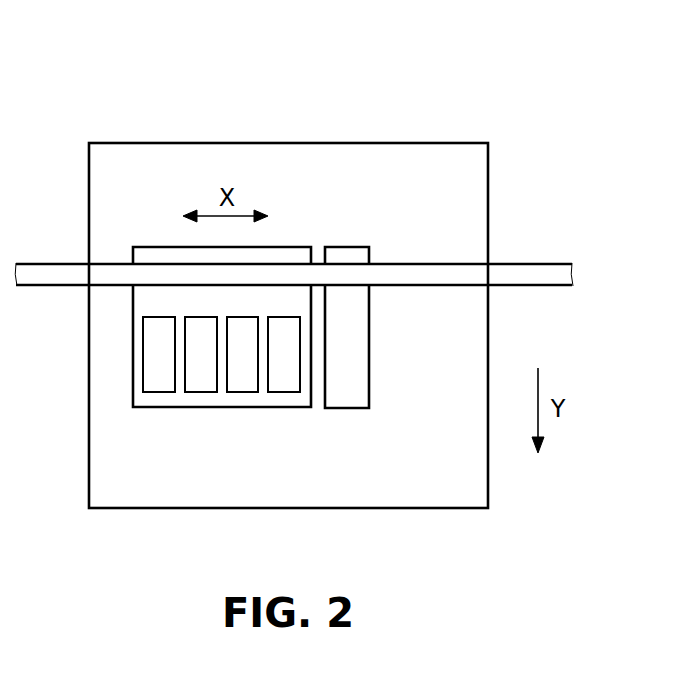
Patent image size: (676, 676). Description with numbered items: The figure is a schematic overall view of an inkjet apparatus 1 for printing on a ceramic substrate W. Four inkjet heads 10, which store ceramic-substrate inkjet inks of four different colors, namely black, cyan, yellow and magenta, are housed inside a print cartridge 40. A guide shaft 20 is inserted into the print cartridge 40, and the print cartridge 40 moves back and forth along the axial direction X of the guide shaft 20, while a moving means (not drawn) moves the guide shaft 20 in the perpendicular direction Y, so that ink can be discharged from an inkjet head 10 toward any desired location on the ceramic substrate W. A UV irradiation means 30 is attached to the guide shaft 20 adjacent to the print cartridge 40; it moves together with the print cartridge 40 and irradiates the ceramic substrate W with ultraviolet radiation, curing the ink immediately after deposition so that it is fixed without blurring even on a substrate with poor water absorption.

The inkjet apparatus 1 is at (507, 92).
The inkjet head 10 is at (159, 392).
The guide shaft 20 is at (532, 272).
The UV irradiation means 30 is at (360, 333).
The print cartridge 40 is at (287, 256).
The ceramic substrate W is at (473, 166).